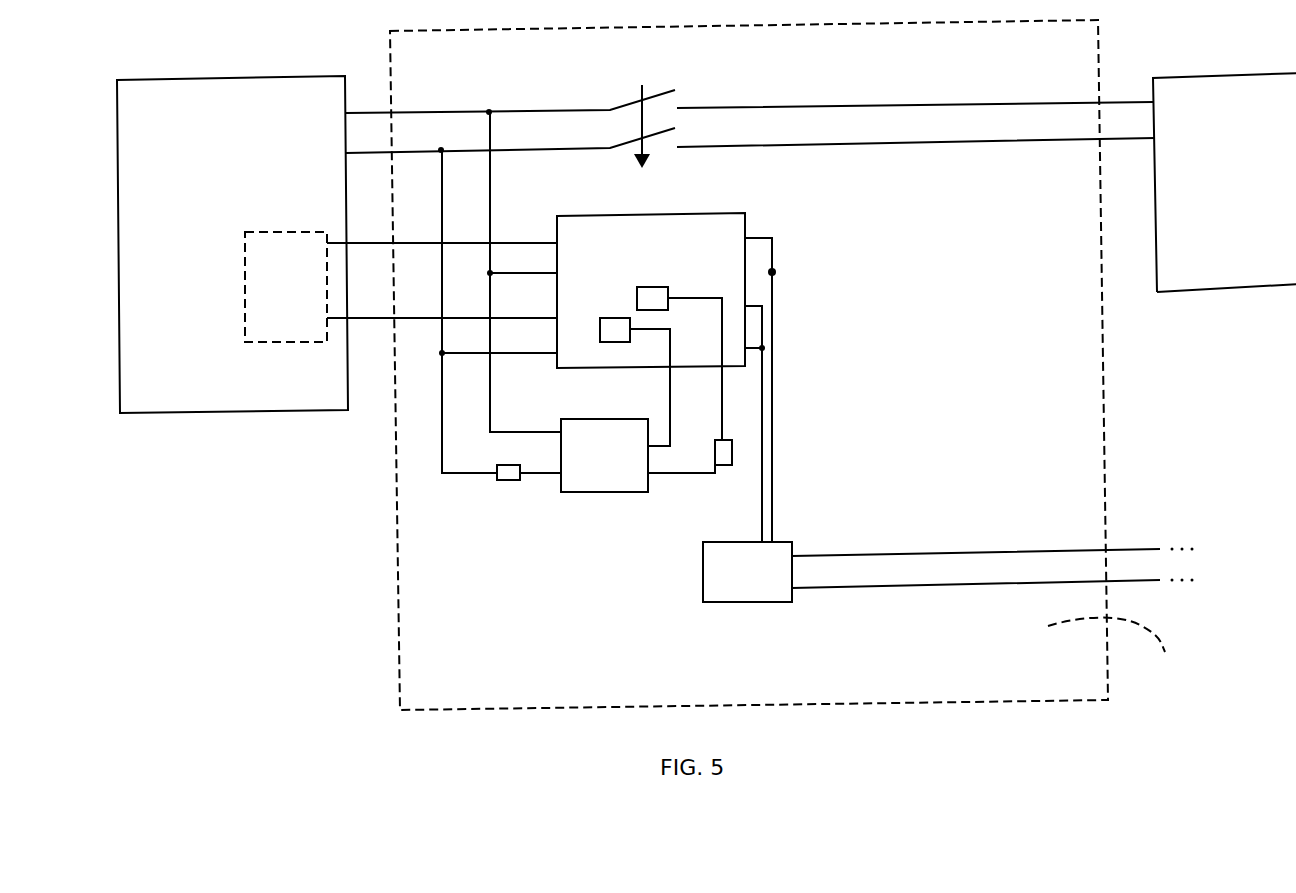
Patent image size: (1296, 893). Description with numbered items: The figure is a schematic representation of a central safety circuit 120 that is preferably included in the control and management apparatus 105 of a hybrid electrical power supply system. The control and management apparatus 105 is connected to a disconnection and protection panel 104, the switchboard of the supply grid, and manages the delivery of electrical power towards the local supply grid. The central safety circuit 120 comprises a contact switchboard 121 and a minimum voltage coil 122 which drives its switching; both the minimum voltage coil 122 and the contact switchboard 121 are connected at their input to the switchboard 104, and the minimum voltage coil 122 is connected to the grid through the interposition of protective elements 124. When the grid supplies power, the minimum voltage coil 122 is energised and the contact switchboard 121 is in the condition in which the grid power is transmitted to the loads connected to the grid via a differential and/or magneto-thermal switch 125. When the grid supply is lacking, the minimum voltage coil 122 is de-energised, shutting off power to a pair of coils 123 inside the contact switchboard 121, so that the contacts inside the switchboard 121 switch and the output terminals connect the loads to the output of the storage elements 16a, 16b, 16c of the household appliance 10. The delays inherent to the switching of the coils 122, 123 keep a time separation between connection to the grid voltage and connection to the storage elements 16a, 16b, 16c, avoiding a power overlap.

The household appliance 10 is at (228, 375).
The storage element 16a is at (242, 245).
The storage element 16b is at (242, 245).
The storage element 16c is at (282, 243).
The disconnection and protection panel 104 is at (1261, 190).
The control and management apparatus 105 is at (1132, 654).
The central safety circuit 120 is at (445, 532).
The contact switchboard 121 is at (605, 240).
The minimum voltage coil 122 is at (608, 468).
The pair of coils 123 is at (612, 327).
The protective elements 124 is at (509, 477).
The differential and/or magneto-thermal switch 125 is at (741, 572).